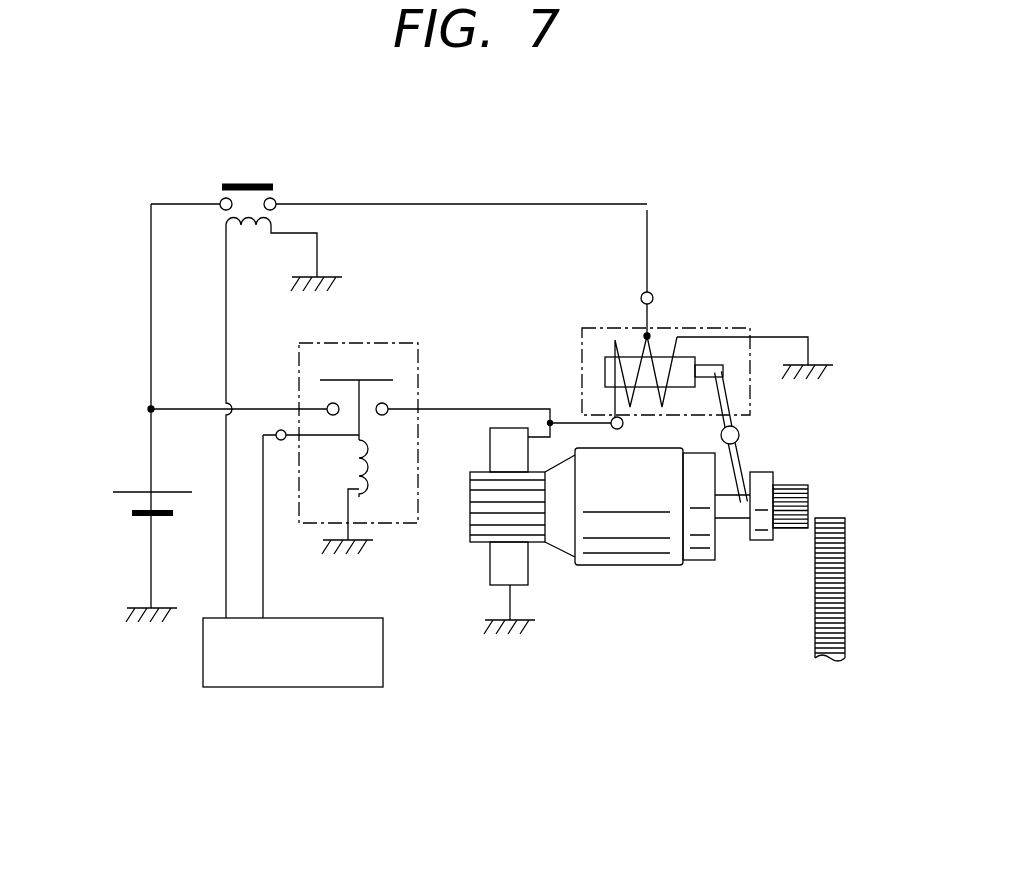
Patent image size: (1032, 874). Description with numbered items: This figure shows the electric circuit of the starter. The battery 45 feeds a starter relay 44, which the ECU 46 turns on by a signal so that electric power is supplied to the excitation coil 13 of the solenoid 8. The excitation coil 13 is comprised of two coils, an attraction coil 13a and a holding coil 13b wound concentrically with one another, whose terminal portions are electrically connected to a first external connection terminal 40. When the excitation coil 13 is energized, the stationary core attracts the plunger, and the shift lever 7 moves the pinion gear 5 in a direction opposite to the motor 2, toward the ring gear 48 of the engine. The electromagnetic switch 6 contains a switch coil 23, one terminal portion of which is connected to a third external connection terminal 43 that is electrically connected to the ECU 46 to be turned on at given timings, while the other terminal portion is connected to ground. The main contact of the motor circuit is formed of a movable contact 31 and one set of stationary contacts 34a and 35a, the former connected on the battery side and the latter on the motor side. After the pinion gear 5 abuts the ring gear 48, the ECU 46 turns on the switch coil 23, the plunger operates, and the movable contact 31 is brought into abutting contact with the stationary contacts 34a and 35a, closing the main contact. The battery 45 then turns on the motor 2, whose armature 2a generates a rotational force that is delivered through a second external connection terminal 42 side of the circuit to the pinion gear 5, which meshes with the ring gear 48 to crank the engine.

The motor 2 is at (610, 532).
The armature 2a is at (652, 548).
The pinion gear 5 is at (808, 490).
The electromagnetic switch 6 is at (359, 428).
The shift lever 7 is at (740, 462).
The solenoid 8 is at (650, 332).
The excitation coil 13 is at (581, 334).
The attraction coil 13a is at (605, 375).
The holding coil 13b is at (613, 356).
The switch coil 23 is at (370, 456).
The movable contact 31 is at (341, 380).
The stationary contact 34a is at (327, 405).
The stationary contact 35a is at (388, 405).
The first external connection terminal 40 is at (641, 297).
The second external connection terminal 42 is at (615, 430).
The third external connection terminal 43 is at (280, 441).
The starter relay 44 is at (276, 184).
The battery 45 is at (121, 500).
The ECU 46 is at (292, 688).
The ring gear 48 is at (845, 633).